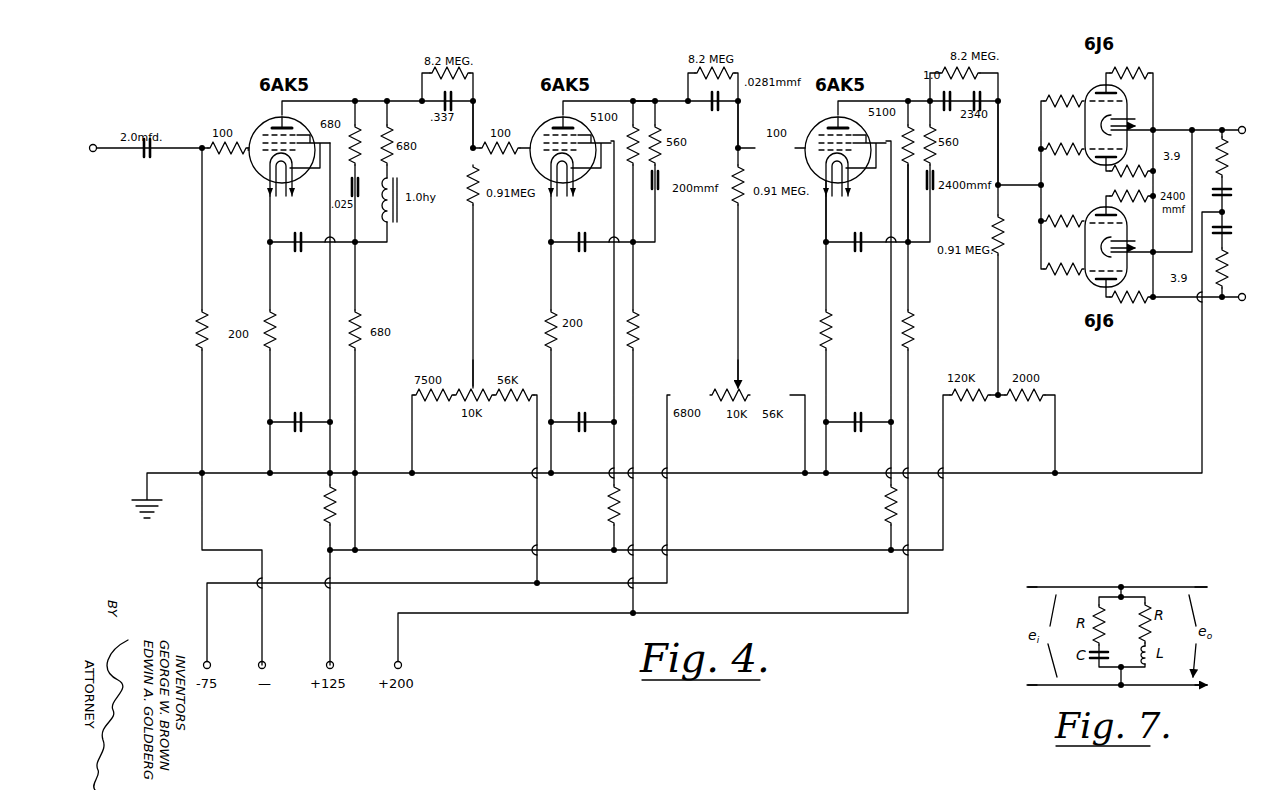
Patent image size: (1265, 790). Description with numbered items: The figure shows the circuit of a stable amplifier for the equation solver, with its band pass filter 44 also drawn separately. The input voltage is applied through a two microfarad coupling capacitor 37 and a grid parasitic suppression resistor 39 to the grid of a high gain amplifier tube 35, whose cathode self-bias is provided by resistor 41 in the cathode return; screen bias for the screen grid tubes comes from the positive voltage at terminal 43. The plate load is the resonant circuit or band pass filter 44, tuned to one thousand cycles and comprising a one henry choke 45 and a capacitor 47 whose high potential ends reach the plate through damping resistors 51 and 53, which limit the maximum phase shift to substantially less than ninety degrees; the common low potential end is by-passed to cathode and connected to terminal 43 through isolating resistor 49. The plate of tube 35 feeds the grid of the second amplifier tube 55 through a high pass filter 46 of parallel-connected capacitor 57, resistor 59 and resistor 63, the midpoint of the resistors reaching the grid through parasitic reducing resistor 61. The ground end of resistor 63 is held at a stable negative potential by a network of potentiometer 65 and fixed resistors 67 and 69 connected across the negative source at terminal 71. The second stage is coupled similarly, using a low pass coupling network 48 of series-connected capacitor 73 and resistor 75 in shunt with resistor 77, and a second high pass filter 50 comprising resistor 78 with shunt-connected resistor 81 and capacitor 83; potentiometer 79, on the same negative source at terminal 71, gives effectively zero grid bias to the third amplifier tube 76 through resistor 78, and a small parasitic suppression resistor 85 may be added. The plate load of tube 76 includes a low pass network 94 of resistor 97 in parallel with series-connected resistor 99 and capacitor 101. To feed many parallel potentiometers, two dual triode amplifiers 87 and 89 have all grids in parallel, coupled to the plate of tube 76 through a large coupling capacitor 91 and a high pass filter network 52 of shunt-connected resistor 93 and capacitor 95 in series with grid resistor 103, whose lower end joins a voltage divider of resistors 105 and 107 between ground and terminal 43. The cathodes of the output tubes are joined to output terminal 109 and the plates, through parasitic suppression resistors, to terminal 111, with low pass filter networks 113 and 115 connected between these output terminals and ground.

In FIG. 4, the high gain amplifier tube 35 is at (272, 124).
In FIG. 4, the coupling capacitor 37 is at (145, 152).
In FIG. 4, the grid parasitic suppression resistor 39 is at (220, 151).
In FIG. 4, the cathode resistor 41 is at (276, 328).
In FIG. 4, the positive voltage terminal 43 is at (328, 662).
In FIG. 4, the band pass filter 44 is at (390, 206).
In FIG. 7, the band pass filter 44 is at (1132, 633).
In FIG. 4, the choke 45 is at (393, 228).
In FIG. 4, the high pass filter 46 is at (464, 147).
In FIG. 4, the capacitor 47 is at (360, 196).
In FIG. 4, the low pass coupling network 48 is at (652, 124).
In FIG. 4, the isolating resistor 49 is at (360, 322).
In FIG. 4, the second high pass filter 50 is at (737, 146).
In FIG. 4, the damping resistor 51 is at (355, 101).
In FIG. 4, the high pass filter network 52 is at (1020, 150).
In FIG. 4, the damping resistor 53 is at (389, 132).
In FIG. 4, the second amplifier tube 55 is at (546, 122).
In FIG. 4, the capacitor 57 is at (455, 101).
In FIG. 4, the resistor 59 is at (430, 72).
In FIG. 4, the parasitic reducing resistor 61 is at (501, 153).
In FIG. 4, the resistor 63 is at (469, 176).
In FIG. 4, the potentiometer 65 is at (466, 385).
In FIG. 4, the fixed resistor 67 is at (412, 395).
In FIG. 4, the fixed resistor 69 is at (526, 386).
In FIG. 4, the negative potential terminal 71 is at (210, 662).
In FIG. 4, the capacitor 73 is at (662, 185).
In FIG. 4, the resistor 75 is at (662, 151).
In FIG. 4, the third amplifier tube 76 is at (844, 189).
In FIG. 4, the resistor 77 is at (632, 160).
In FIG. 4, the resistor 78 is at (742, 202).
In FIG. 4, the potentiometer 79 is at (546, 322).
In FIG. 4, the resistor 81 is at (694, 73).
In FIG. 4, the capacitor 83 is at (712, 103).
In FIG. 4, the parasitic suppression resistor 85 is at (816, 124).
In FIG. 4, the dual triode amplifier 87 is at (1094, 90).
In FIG. 4, the dual triode amplifier 89 is at (1092, 214).
In FIG. 4, the coupling capacitor 91 is at (946, 104).
In FIG. 4, the resistor 93 is at (983, 73).
In FIG. 4, the junction 94 is at (911, 178).
In FIG. 4, the capacitor 95 is at (983, 100).
In FIG. 4, the resistor 97 is at (913, 100).
In FIG. 4, the resistor 99 is at (936, 150).
In FIG. 4, the capacitor 101 is at (932, 187).
In FIG. 4, the grid resistor 103 is at (996, 255).
In FIG. 4, the resistor 105 is at (968, 400).
In FIG. 4, the resistor 107 is at (1027, 400).
In FIG. 4, the output terminal 109 is at (1240, 125).
In FIG. 4, the terminal 111 is at (1228, 268).
In FIG. 4, the low pass filter network 113 is at (1220, 138).
In FIG. 4, the low pass filter network 115 is at (1206, 300).